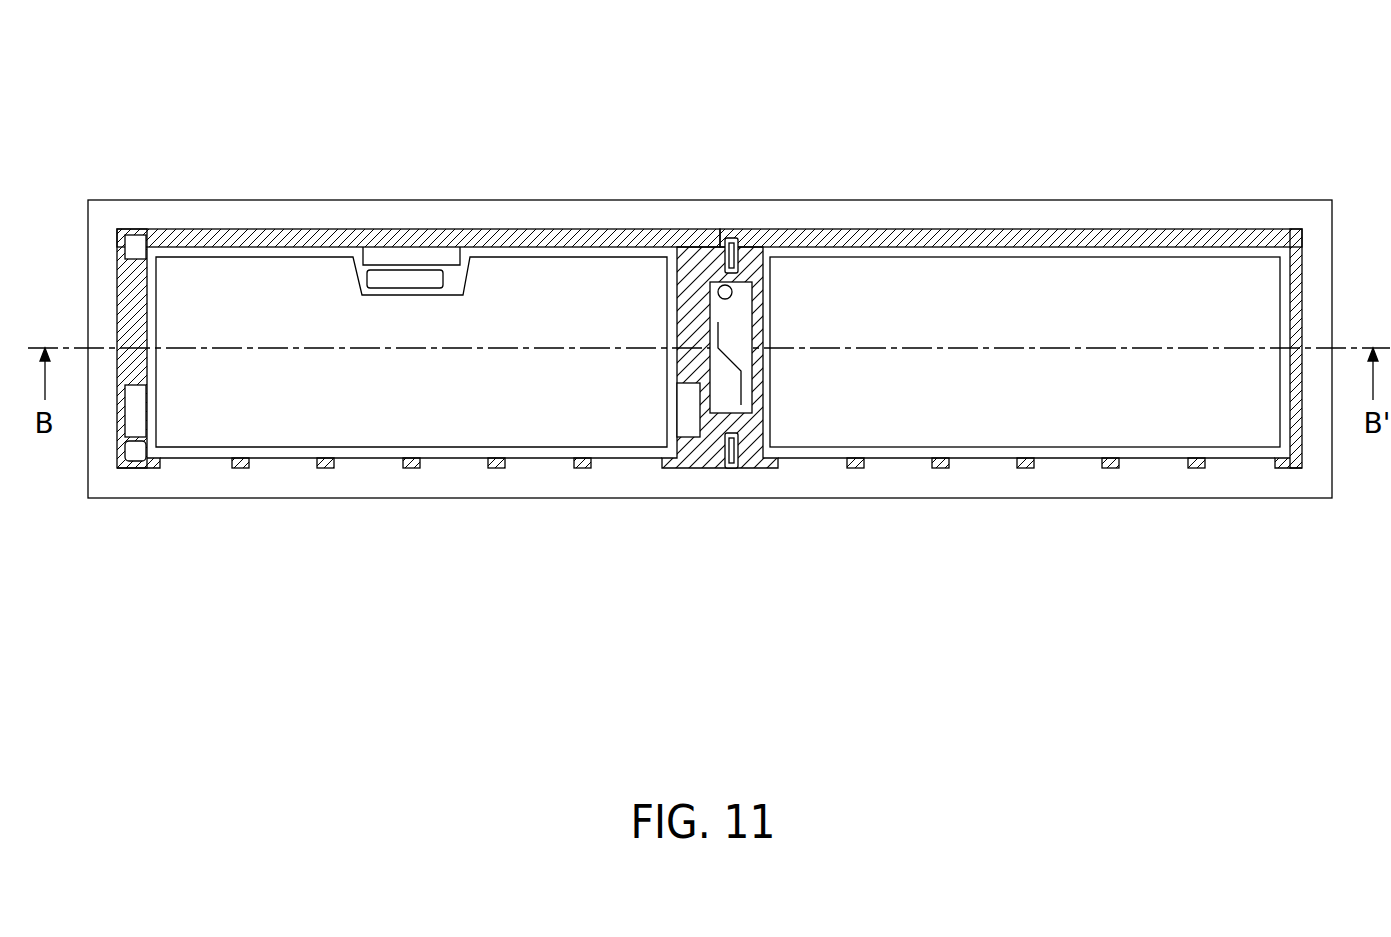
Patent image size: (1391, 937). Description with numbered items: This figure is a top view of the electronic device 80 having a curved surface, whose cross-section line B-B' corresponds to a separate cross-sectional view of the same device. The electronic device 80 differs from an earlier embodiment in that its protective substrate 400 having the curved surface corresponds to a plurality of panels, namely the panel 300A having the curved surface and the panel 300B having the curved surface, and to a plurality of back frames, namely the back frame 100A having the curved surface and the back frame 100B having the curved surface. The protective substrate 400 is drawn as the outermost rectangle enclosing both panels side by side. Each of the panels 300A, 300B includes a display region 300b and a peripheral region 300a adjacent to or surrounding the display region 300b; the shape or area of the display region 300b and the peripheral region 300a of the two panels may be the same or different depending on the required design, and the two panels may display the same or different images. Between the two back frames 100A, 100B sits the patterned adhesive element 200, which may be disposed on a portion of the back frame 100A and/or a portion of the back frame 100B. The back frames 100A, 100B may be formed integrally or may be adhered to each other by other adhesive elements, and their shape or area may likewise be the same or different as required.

The electronic device 80 is at (120, 90).
The back frame 100A is at (548, 458).
The back frame 100B is at (908, 458).
The patterned adhesive element 200 is at (778, 238).
The panel 300A is at (480, 102).
The panel 300B is at (902, 102).
The peripheral region 300a is at (612, 256).
The display region 300b is at (508, 290).
The protective substrate 400 is at (1174, 212).